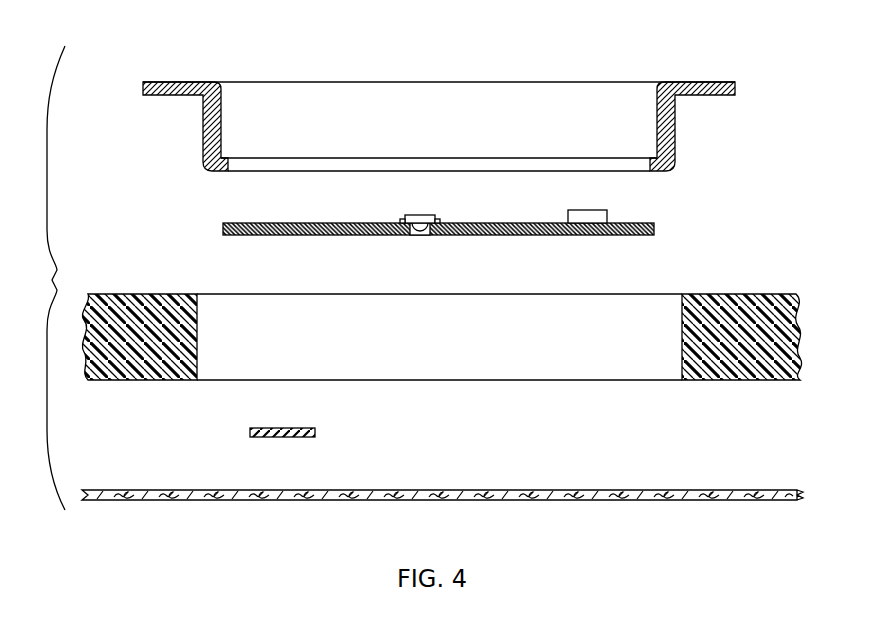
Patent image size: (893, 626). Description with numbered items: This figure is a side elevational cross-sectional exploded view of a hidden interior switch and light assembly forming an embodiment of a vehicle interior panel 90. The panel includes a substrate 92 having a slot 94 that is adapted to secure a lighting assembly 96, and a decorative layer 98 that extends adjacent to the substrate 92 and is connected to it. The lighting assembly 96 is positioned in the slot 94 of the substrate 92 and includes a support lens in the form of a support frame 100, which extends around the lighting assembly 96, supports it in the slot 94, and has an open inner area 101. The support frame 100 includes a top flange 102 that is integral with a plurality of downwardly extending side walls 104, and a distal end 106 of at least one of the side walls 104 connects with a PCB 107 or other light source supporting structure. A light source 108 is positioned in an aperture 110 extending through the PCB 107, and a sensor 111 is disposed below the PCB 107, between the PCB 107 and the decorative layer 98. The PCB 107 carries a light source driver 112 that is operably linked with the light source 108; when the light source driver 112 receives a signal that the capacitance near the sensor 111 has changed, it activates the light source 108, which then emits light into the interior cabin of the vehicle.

The vehicle interior panel 90 is at (152, 410).
The substrate 92 is at (730, 292).
The slot 94 is at (450, 344).
The lighting assembly 96 is at (654, 224).
The decorative layer 98 is at (757, 488).
The support frame 100 is at (441, 124).
The open inner area 101 is at (460, 165).
The top flange 102 is at (165, 80).
The side walls 104 is at (205, 127).
The distal end 106 is at (218, 173).
The PCB 107 is at (340, 155).
The light source 108 is at (428, 233).
The aperture 110 is at (413, 233).
The sensor 111 is at (300, 427).
The light source driver 112 is at (580, 208).